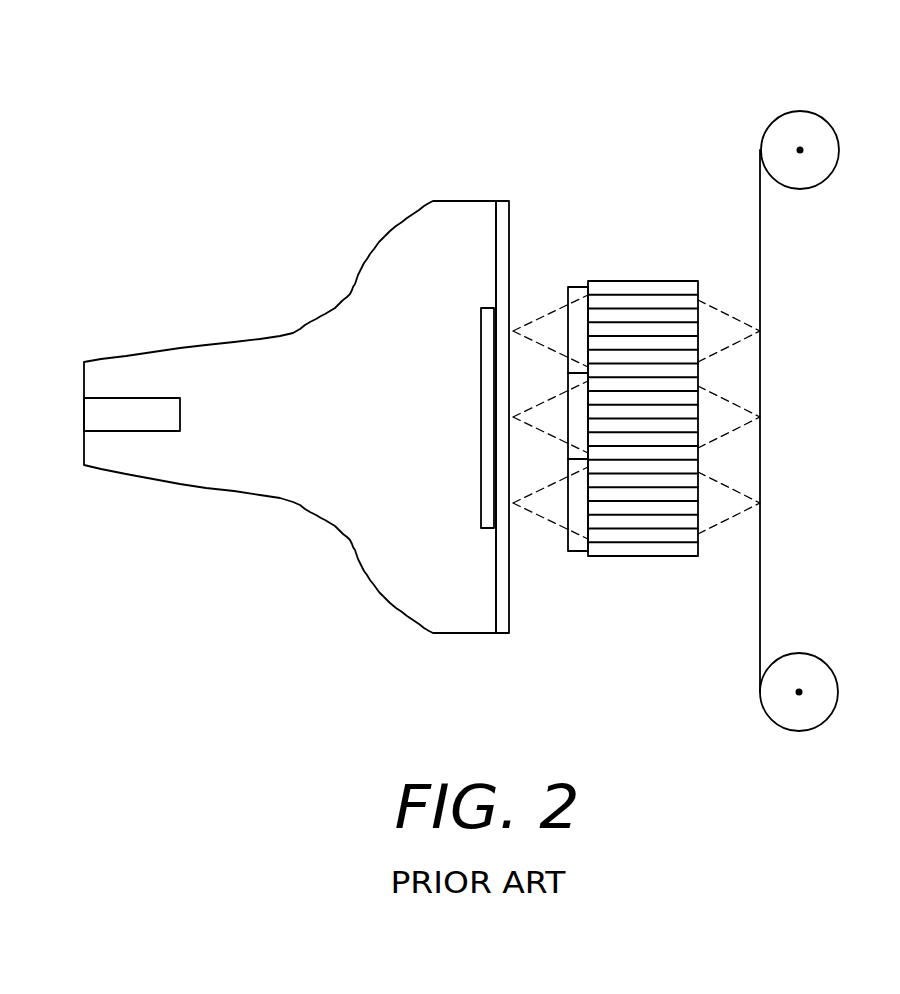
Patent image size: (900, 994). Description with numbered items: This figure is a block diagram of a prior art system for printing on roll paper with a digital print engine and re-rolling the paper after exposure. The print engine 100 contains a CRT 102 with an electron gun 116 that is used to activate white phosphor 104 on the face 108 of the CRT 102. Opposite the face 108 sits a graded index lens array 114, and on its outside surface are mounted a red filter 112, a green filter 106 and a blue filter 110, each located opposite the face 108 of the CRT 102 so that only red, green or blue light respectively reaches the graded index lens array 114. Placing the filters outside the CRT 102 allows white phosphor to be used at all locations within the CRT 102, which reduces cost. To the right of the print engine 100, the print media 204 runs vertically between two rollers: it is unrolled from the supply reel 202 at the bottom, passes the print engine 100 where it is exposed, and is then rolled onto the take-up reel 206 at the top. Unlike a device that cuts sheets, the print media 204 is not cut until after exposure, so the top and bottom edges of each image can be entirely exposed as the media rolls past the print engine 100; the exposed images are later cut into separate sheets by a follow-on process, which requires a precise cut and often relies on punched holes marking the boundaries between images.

The print engine 100 is at (707, 128).
The CRT 102 is at (356, 290).
The white phosphor 104 is at (481, 343).
The green filter 106 is at (567, 426).
The face 108 is at (500, 201).
The blue filter 110 is at (565, 505).
The red filter 112 is at (568, 308).
The graded index lens array 114 is at (616, 282).
The electron gun 116 is at (180, 420).
The supply reel 202 is at (820, 672).
The print media 204 is at (762, 352).
The take-up reel 206 is at (830, 153).